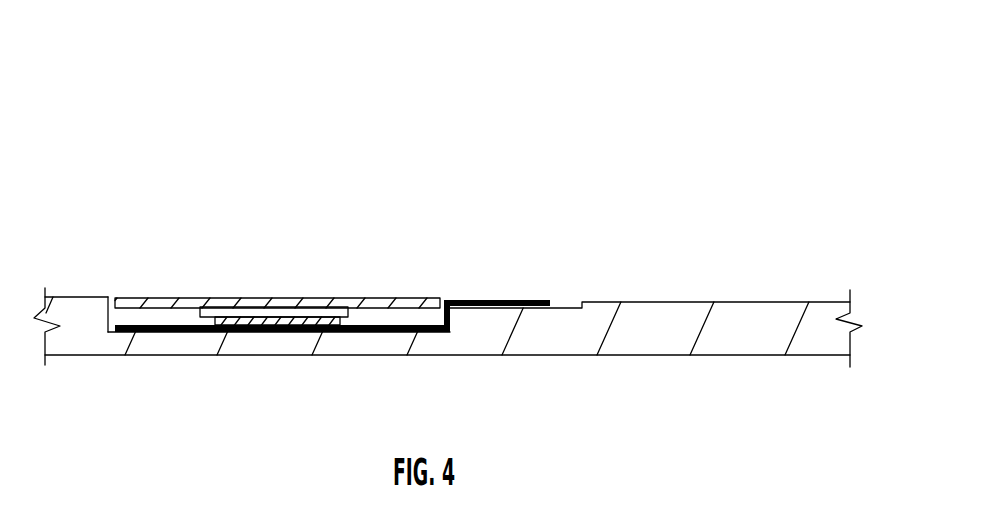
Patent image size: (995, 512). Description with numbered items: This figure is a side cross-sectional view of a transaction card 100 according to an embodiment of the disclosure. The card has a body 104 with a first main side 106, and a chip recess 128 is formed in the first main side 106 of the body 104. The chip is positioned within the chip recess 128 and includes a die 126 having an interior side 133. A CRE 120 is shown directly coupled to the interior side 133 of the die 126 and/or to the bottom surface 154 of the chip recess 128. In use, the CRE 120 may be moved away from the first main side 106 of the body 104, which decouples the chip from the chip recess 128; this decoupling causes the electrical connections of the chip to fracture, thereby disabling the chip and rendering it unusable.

The electronic device assembly 100 is at (624, 108).
The body 104 is at (680, 336).
The first main side 106 is at (733, 302).
The CRE 120 is at (473, 300).
The die 126 is at (312, 327).
The chip recess 128 is at (147, 315).
The interior side 133 is at (230, 332).
The bottom surface 154 is at (112, 333).